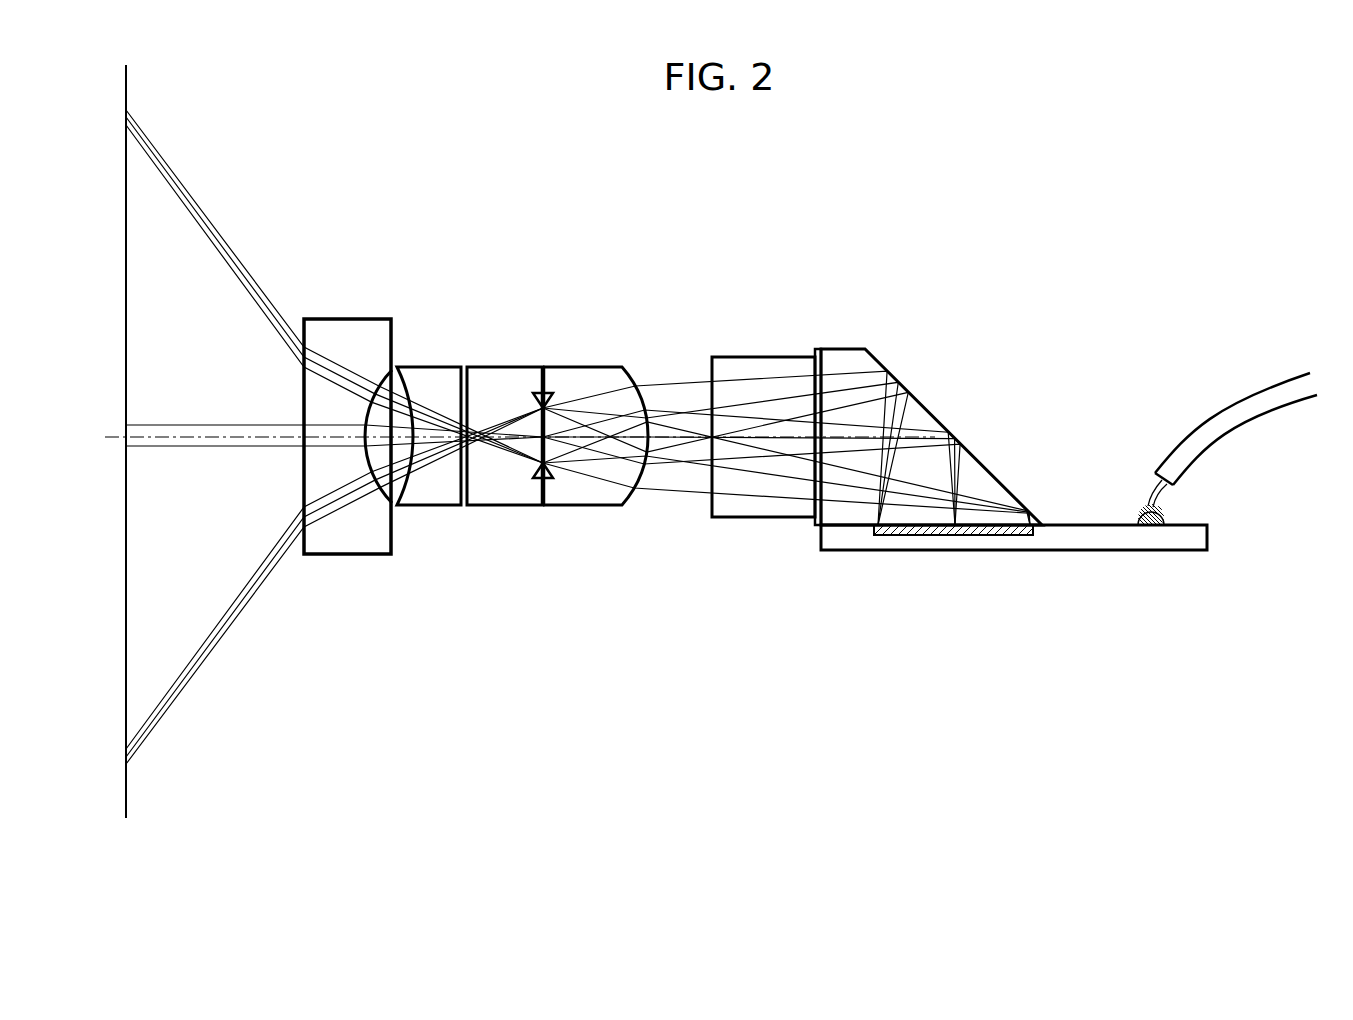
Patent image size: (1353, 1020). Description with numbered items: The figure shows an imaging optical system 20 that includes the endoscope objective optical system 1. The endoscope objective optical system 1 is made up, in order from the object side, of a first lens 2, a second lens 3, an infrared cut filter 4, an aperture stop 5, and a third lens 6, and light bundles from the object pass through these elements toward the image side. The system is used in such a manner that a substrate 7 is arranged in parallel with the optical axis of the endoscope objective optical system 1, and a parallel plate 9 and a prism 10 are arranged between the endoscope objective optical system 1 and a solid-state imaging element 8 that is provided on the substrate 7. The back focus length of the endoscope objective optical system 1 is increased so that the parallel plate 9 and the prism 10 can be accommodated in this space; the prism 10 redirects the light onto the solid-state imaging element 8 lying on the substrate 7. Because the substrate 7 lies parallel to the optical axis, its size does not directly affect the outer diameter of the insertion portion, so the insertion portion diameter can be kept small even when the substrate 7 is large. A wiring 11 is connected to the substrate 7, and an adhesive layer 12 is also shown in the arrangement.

The endoscope objective optical system 1 is at (530, 265).
The first lens 2 is at (348, 319).
The second lens 3 is at (432, 367).
The infrared cut filter 4 is at (507, 367).
The aperture stop 5 is at (546, 380).
The third lens 6 is at (596, 367).
The substrate 7 is at (1118, 552).
The solid-state imaging element 8 is at (955, 535).
The parallel plate 9 is at (765, 357).
The prism 10 is at (925, 409).
The wiring 11 is at (1256, 386).
The adhesive layer 12 is at (817, 349).
The imaging optical system 20 is at (912, 190).